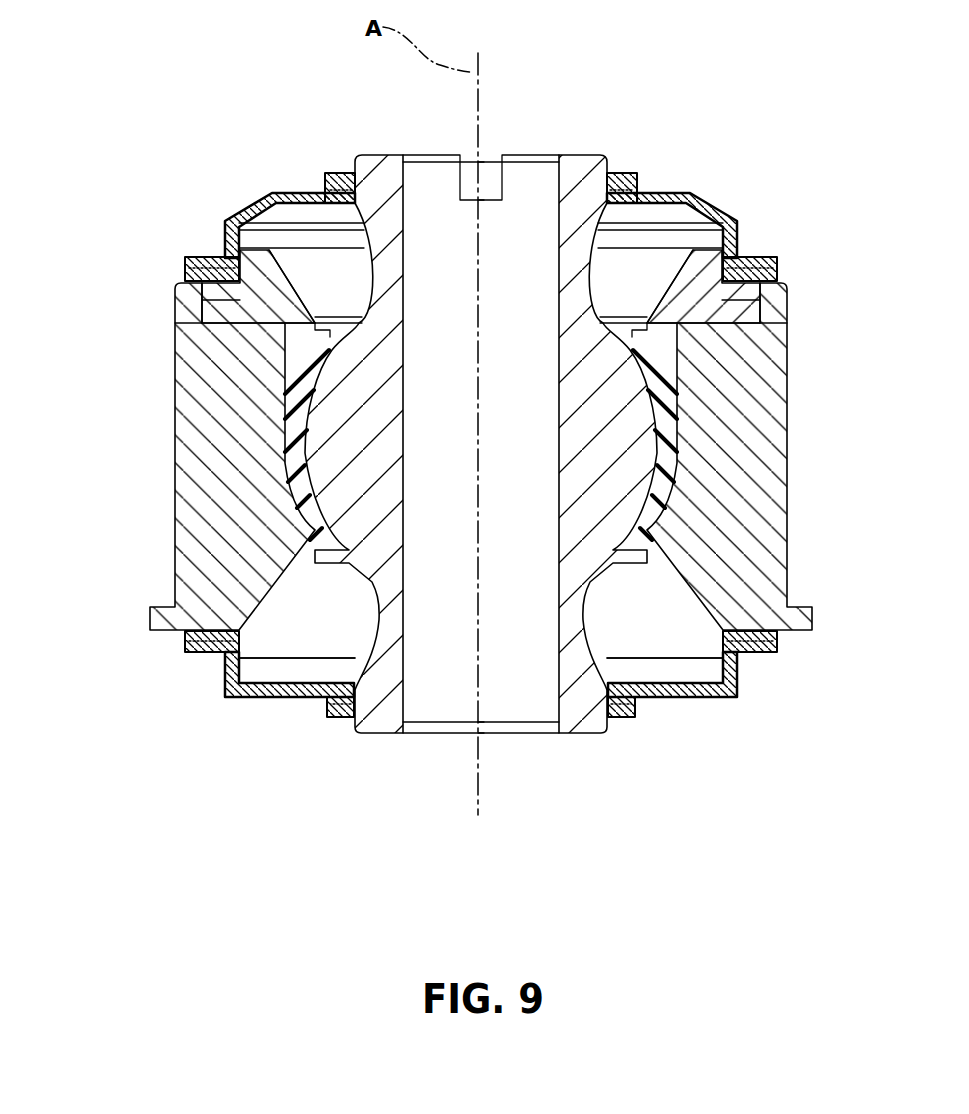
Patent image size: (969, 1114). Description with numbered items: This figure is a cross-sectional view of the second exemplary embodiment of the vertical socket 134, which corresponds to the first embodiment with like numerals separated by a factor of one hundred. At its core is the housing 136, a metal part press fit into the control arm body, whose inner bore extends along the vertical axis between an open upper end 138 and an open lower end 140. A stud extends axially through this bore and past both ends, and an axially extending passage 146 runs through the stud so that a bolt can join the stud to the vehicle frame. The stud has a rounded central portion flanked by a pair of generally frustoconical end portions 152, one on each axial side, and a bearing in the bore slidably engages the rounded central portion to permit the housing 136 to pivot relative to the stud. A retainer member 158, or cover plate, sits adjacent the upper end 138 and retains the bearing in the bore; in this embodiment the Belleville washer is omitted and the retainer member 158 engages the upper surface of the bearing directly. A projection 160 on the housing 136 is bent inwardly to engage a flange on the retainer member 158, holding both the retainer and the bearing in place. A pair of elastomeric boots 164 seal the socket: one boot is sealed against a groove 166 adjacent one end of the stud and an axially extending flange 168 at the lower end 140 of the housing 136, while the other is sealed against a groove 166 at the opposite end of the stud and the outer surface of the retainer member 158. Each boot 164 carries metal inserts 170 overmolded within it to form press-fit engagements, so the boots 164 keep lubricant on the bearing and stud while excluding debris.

The vertical socket 134 is at (745, 222).
The housing 136 is at (760, 582).
The upper end 138 is at (780, 262).
The lower end 140 is at (710, 660).
The passage 146 is at (403, 192).
The frustoconical end portions 152 is at (600, 232).
The retainer member 158 is at (207, 310).
The projection 160 is at (223, 263).
The boots 164 is at (688, 190).
The groove 166 is at (640, 187).
The flange 168 is at (230, 665).
The metal inserts 170 is at (227, 263).